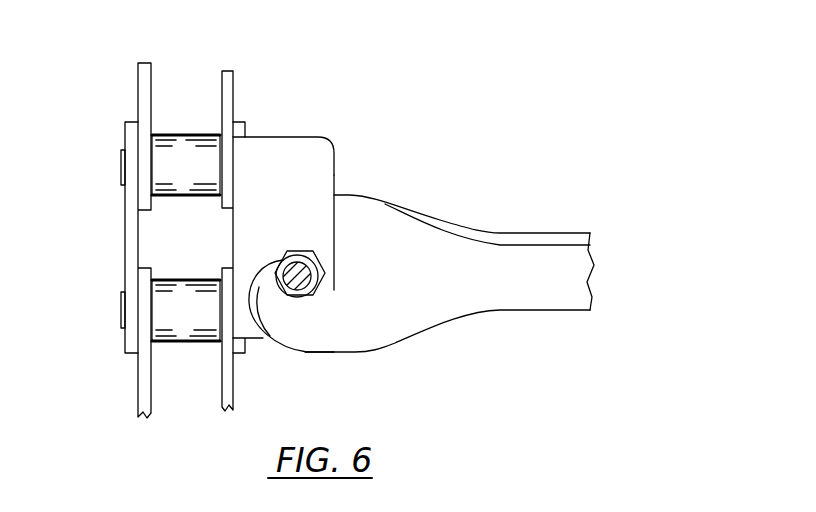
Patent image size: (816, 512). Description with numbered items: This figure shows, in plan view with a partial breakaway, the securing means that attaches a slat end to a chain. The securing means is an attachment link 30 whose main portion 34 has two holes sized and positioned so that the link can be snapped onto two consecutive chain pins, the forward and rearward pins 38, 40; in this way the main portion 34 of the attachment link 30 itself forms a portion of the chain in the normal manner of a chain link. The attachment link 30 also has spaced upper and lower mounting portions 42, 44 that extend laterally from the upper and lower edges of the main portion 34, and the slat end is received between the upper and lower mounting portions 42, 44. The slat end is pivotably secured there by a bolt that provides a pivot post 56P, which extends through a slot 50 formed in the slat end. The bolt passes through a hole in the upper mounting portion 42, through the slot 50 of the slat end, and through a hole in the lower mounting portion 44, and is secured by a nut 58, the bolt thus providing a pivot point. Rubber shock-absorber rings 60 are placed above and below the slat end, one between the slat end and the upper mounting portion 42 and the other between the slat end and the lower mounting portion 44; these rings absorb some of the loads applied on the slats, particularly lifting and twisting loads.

The attachment link 30 is at (318, 170).
The main portion 34 is at (247, 131).
The forward pin 38 is at (121, 165).
The rearward pin 40 is at (121, 313).
The upper mounting portion 42 is at (291, 155).
The lower mounting portion 44 is at (272, 333).
The slot 50 is at (286, 292).
The pivot post 56P is at (323, 287).
The nut 58 is at (326, 256).
The rubber shock-absorber rings 60 is at (257, 318).